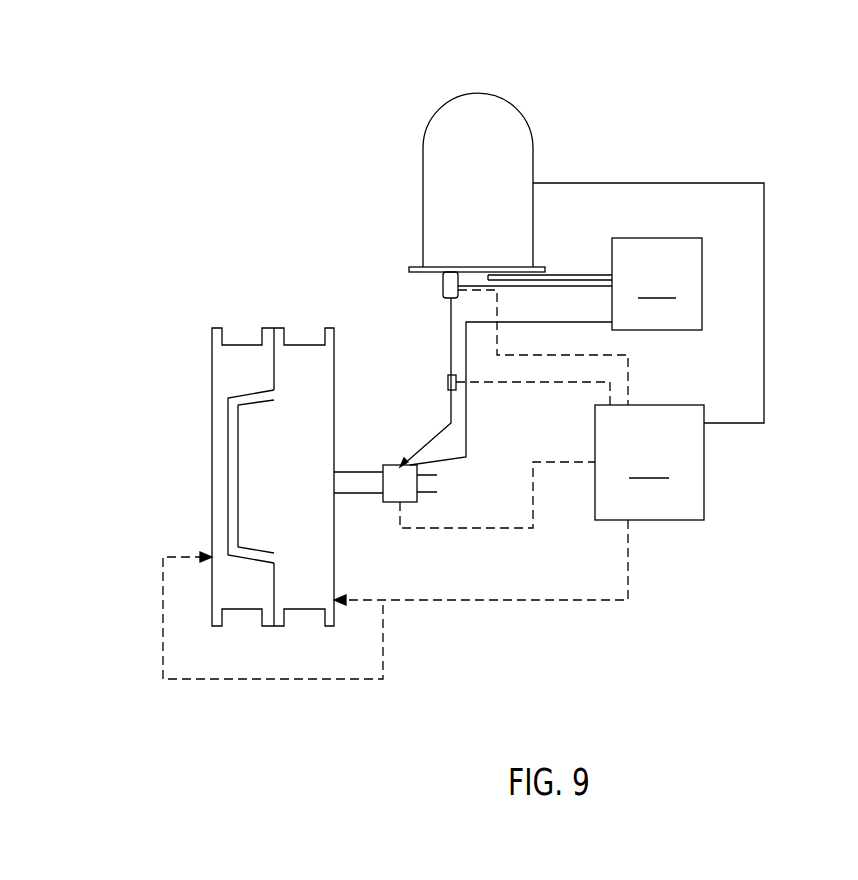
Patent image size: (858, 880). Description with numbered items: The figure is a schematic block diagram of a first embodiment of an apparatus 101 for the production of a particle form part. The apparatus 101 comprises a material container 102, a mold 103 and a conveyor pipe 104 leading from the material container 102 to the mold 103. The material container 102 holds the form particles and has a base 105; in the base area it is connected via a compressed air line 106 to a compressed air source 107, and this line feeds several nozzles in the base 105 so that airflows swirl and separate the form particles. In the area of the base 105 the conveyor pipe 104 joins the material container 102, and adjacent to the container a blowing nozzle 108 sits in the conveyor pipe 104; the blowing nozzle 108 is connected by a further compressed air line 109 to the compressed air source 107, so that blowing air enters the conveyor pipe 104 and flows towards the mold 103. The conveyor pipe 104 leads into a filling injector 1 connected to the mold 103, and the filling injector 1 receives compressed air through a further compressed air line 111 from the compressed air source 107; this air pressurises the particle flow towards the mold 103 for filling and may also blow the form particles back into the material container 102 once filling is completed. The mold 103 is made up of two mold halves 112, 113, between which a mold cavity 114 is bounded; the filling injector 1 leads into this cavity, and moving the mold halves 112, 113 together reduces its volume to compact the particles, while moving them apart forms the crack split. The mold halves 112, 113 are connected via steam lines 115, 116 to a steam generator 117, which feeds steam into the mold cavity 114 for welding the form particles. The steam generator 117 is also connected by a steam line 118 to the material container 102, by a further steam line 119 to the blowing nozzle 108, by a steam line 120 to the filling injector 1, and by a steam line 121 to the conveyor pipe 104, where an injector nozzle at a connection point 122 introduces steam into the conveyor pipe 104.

The filling injector 1 is at (366, 465).
The apparatus 101 is at (309, 94).
The material container 102 is at (530, 118).
The mold 103 is at (234, 446).
The conveyor pipe 104 is at (451, 350).
The base 105 is at (411, 273).
The compressed air line 106 is at (580, 274).
The compressed air source 107 is at (657, 284).
The blowing nozzle 108 is at (443, 291).
The further compressed air line 109 is at (537, 289).
The further compressed air line 111 is at (467, 437).
The mold half 112 is at (235, 355).
The mold half 113 is at (295, 355).
The mold cavity 114 is at (228, 478).
The steam line 115 is at (163, 626).
The steam line 116 is at (366, 600).
The steam generator 117 is at (649, 462).
The steam line 118 is at (766, 239).
The further steam line 119 is at (630, 372).
The steam line 120 is at (458, 530).
The steam line 121 is at (528, 383).
The connection point 122 is at (448, 382).